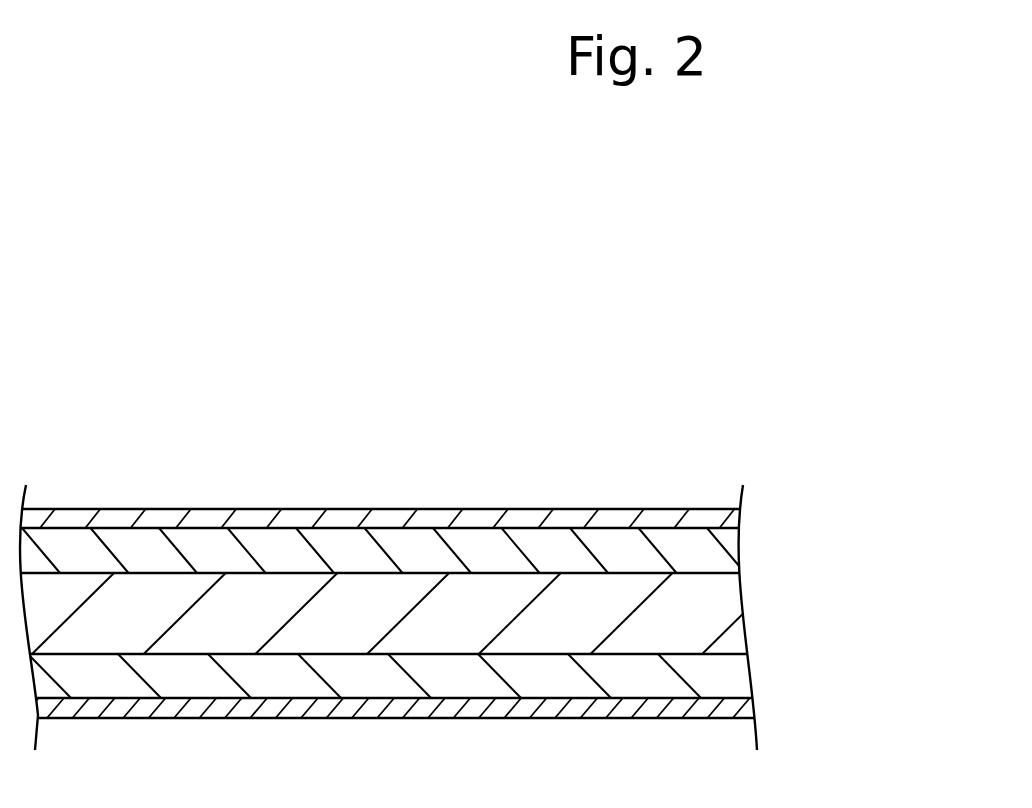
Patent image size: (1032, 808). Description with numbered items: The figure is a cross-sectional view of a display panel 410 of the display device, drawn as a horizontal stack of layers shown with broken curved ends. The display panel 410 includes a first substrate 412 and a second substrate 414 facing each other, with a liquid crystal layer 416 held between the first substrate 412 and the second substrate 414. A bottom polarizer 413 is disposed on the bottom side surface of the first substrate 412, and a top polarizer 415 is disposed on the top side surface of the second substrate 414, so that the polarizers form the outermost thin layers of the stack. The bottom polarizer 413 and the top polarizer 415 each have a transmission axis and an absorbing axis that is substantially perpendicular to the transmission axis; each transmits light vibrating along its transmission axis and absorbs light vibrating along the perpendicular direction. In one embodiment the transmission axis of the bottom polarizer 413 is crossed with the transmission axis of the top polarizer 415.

The display panel 410 is at (425, 481).
The first substrate 412 is at (729, 670).
The bottom polarizer 413 is at (752, 708).
The second substrate 414 is at (734, 552).
The top polarizer 415 is at (735, 513).
The liquid crystal layer 416 is at (727, 622).